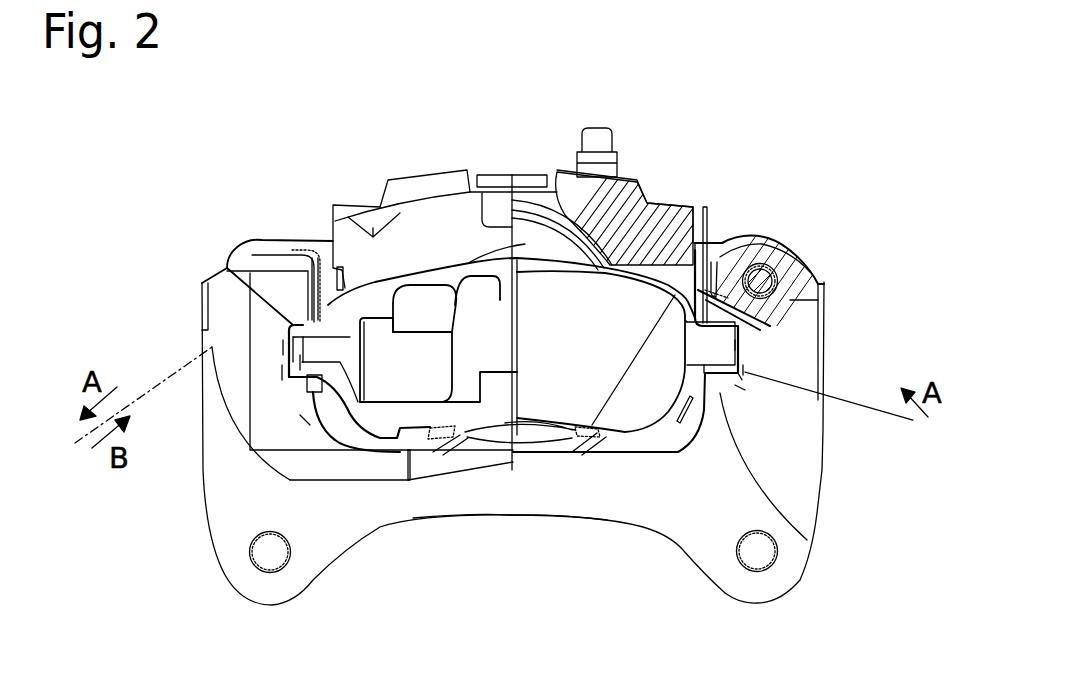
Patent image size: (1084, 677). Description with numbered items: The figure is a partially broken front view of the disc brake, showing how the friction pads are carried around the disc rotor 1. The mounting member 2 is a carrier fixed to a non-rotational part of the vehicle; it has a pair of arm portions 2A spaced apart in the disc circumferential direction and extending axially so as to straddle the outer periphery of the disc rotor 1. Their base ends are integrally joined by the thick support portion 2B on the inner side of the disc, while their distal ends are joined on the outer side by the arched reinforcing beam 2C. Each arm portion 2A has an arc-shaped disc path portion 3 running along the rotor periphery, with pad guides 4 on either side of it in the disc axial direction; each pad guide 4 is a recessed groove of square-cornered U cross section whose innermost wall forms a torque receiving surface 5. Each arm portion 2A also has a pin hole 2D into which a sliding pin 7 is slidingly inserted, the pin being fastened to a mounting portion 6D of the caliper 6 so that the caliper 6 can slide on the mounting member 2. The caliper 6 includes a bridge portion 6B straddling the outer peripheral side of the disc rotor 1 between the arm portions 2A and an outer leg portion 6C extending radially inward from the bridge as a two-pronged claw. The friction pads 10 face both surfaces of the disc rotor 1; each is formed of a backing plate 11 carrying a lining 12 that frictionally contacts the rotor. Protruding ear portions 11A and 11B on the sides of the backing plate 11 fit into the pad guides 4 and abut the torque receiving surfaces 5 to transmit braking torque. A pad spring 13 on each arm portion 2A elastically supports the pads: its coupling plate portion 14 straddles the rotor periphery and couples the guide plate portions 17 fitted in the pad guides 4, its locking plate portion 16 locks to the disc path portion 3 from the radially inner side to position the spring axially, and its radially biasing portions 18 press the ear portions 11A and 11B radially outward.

The disc rotor 1 is at (880, 393).
The mounting member 2 is at (218, 580).
The arm portions 2A is at (270, 278).
The support portion 2B is at (528, 497).
The reinforcing beam 2C is at (435, 470).
The pin hole 2D is at (762, 238).
The disc path portion 3 is at (803, 308).
The pad guides 4 is at (303, 370).
The torque receiving surface 5 is at (227, 268).
The caliper 6 is at (503, 165).
The bridge portion 6B is at (627, 213).
The outer leg portion 6C is at (418, 357).
The mounting portion 6D is at (268, 245).
The sliding pin 7 is at (789, 283).
The friction pads 10 is at (461, 437).
The backing plate 11 is at (495, 410).
The ear portion 11A is at (720, 337).
The ear portion 11B is at (290, 328).
The lining 12 is at (570, 383).
The pad springs 13 is at (276, 346).
The coupling plate portion 14 is at (317, 252).
The locking plate portion 16 is at (709, 290).
The guide plate portions 17 is at (283, 366).
The radially biasing portions 18 is at (307, 390).